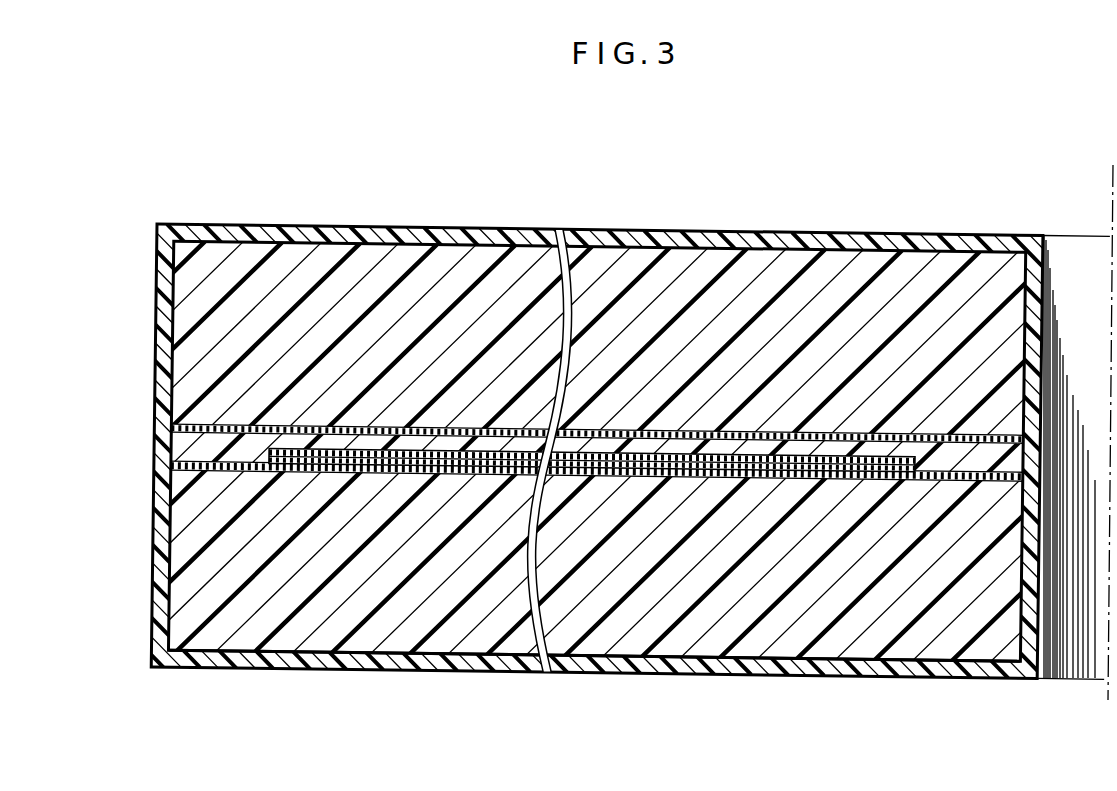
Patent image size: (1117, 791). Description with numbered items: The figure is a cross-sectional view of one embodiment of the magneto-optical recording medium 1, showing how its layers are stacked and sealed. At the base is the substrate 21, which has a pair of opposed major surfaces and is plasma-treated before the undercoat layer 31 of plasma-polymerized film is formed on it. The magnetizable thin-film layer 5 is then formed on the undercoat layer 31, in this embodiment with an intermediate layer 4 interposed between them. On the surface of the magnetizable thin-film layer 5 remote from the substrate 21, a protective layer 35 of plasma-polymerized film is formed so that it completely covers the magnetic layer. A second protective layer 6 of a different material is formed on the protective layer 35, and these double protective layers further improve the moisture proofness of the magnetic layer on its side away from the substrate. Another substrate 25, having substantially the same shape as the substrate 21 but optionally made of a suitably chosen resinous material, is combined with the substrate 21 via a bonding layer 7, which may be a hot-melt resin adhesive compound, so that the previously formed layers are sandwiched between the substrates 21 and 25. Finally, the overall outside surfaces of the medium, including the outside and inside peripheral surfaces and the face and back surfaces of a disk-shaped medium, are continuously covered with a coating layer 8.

The magneto-optical recording medium 1 is at (277, 191).
The intermediate layer 4 is at (280, 597).
The magnetizable thin-film layer 5 is at (503, 537).
The second protective layer 6 is at (253, 437).
The bonding layer 7 is at (218, 427).
The coating layer 8 is at (833, 245).
The substrate 21 is at (360, 635).
The second substrate 25 is at (385, 275).
The undercoat layer 31 is at (282, 470).
The protective layer 35 is at (193, 463).